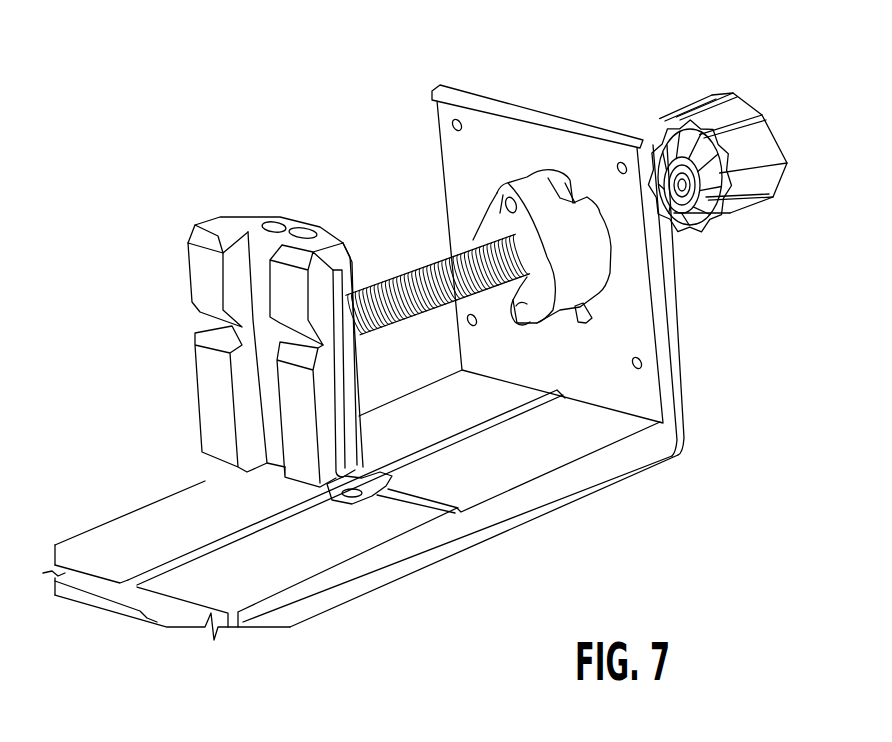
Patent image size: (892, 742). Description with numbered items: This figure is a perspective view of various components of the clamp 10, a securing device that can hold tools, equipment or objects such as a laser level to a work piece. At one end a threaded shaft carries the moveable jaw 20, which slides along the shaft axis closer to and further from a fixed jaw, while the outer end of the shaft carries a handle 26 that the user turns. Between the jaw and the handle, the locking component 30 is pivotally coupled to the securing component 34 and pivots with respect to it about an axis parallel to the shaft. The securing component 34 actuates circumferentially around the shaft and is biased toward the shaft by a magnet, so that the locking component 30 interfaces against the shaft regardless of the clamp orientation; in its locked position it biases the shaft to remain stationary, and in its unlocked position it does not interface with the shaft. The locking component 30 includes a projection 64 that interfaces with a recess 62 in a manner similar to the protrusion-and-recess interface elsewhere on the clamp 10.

The clamp 10 is at (111, 191).
The moveable jaw 20 is at (218, 238).
The handle 26 is at (746, 129).
The locking component 30 is at (585, 241).
The securing component 34 is at (464, 216).
The recess 62 is at (592, 311).
The projection 64 is at (523, 326).